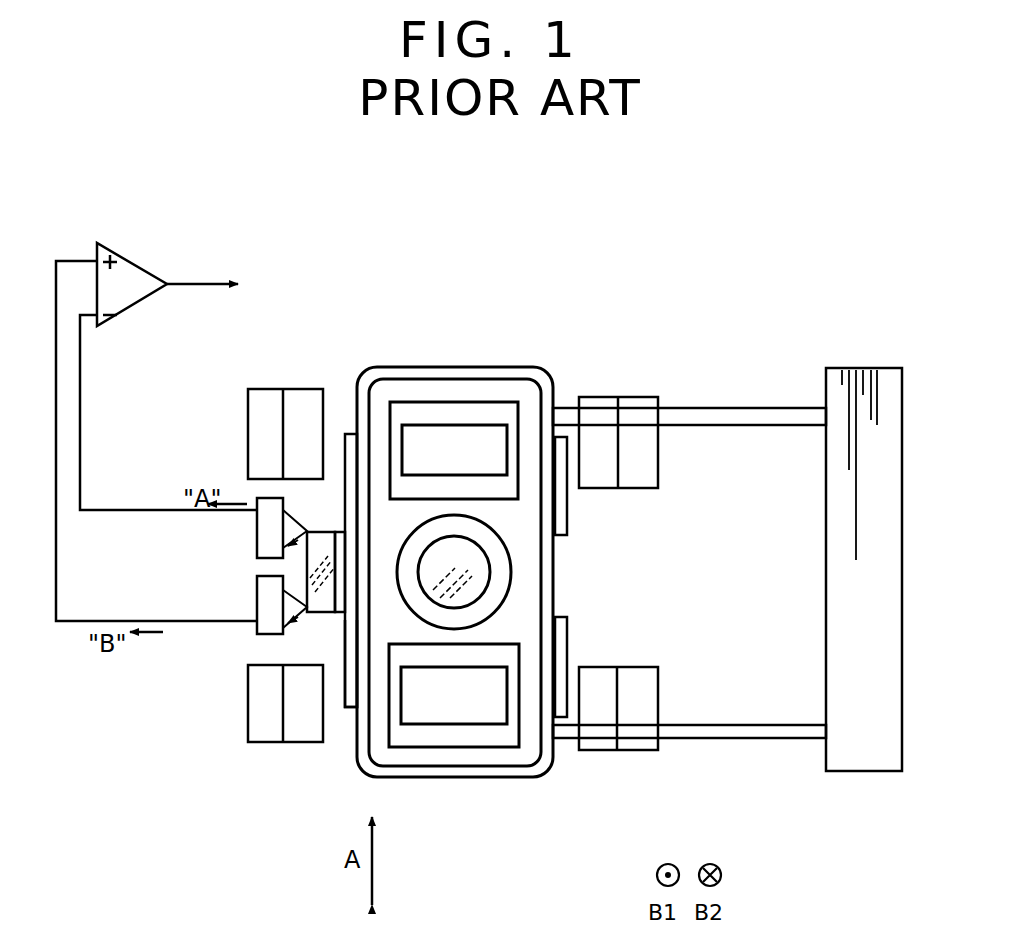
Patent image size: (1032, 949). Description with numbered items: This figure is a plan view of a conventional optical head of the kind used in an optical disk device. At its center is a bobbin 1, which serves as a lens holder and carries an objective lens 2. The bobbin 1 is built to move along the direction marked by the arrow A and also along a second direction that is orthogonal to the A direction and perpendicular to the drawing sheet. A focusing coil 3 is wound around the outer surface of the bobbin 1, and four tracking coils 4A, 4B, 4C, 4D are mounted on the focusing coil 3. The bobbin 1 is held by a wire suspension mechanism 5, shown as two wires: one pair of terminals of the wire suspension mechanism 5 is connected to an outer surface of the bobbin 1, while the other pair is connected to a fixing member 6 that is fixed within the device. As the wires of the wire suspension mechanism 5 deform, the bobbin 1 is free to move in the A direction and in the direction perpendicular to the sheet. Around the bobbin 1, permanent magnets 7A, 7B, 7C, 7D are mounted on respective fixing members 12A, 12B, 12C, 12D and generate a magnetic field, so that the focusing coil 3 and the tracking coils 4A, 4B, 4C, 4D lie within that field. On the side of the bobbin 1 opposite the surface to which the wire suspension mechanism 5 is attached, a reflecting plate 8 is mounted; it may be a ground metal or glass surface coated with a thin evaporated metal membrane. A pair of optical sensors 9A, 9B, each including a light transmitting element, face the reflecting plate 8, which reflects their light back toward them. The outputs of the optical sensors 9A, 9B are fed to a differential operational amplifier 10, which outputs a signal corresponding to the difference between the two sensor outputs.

The bobbin 1 is at (530, 745).
The objective lens 2 is at (470, 560).
The focusing coil 3 is at (399, 379).
The tracking coil 4A is at (568, 515).
The tracking coil 4B is at (350, 434).
The tracking coil 4C is at (349, 708).
The tracking coil 4D is at (568, 620).
The wire suspension mechanism 5 is at (765, 408).
The fixing member 6 is at (845, 772).
The permanent magnet 7A is at (606, 488).
The permanent magnet 7B is at (303, 392).
The permanent magnet 7C is at (298, 675).
The permanent magnet 7D is at (600, 672).
The reflecting plate 8 is at (326, 612).
The optical sensor 9A is at (257, 545).
The optical sensor 9B is at (257, 595).
The differential operational amplifier 10 is at (135, 262).
The fixing member 12A is at (648, 397).
The fixing member 12B is at (248, 410).
The fixing member 12C is at (258, 720).
The fixing member 12D is at (650, 677).